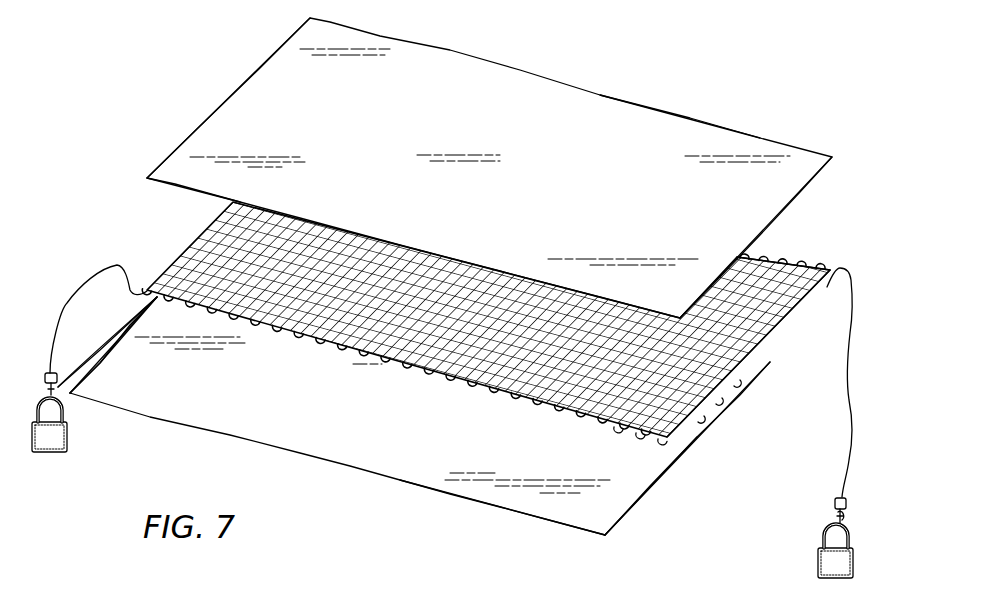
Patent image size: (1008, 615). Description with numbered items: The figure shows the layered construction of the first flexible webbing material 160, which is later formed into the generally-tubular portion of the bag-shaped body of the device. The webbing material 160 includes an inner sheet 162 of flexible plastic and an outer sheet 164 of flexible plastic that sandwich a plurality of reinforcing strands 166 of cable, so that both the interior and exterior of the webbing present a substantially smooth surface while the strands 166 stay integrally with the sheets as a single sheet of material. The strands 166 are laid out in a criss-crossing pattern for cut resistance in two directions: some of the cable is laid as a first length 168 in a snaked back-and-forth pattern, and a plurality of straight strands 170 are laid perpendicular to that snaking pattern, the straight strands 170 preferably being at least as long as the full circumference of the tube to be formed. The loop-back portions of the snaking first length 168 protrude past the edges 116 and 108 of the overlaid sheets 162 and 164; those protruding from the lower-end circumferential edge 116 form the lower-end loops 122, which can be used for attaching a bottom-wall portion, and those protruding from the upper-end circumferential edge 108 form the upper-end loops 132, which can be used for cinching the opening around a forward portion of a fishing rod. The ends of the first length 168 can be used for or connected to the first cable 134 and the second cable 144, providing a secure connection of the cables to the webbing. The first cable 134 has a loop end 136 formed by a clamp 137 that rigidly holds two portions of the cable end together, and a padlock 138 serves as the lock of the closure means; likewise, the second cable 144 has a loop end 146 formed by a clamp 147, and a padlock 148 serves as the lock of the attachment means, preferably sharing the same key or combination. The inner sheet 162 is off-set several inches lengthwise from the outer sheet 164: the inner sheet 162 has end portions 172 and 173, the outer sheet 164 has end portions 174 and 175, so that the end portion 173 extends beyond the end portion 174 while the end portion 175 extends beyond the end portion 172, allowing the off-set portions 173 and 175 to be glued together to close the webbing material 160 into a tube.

The first flexible webbing material 160 is at (643, 52).
The inner sheet 162 is at (634, 196).
The outer sheet 164 is at (366, 424).
The lower-end loops 122 is at (797, 259).
The lower-end circumferential edge 116 is at (690, 118).
The upper-end circumferential edge 108 is at (155, 181).
The end portion of inner sheet 172 is at (238, 107).
The end portion of inner sheet 173 is at (793, 168).
The reinforcing strands 166 is at (797, 245).
The first length 168 is at (773, 337).
The straight strands 170 is at (703, 420).
The upper-end loops 132 is at (663, 438).
The first cable 134 is at (55, 315).
The loop end 136 is at (80, 377).
The clamp 137 is at (58, 382).
The padlock 138 is at (68, 437).
The end portion of outer sheet 175 is at (197, 377).
The end portion of outer sheet 174 is at (607, 515).
The second cable 144 is at (843, 487).
The clamp 147 is at (833, 503).
The loop end 146 is at (833, 518).
The padlock 148 is at (832, 567).